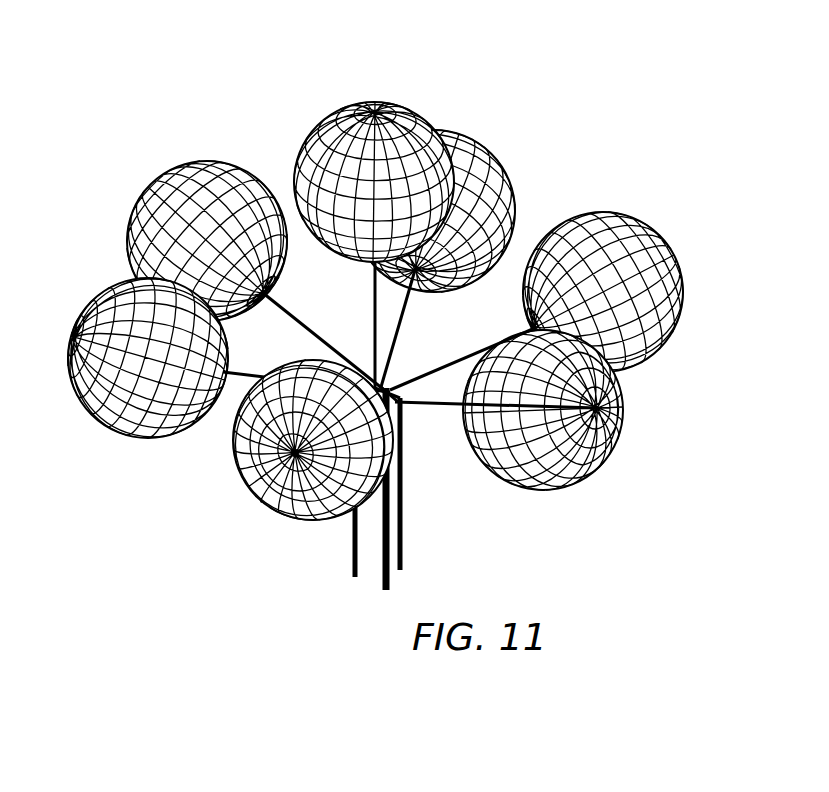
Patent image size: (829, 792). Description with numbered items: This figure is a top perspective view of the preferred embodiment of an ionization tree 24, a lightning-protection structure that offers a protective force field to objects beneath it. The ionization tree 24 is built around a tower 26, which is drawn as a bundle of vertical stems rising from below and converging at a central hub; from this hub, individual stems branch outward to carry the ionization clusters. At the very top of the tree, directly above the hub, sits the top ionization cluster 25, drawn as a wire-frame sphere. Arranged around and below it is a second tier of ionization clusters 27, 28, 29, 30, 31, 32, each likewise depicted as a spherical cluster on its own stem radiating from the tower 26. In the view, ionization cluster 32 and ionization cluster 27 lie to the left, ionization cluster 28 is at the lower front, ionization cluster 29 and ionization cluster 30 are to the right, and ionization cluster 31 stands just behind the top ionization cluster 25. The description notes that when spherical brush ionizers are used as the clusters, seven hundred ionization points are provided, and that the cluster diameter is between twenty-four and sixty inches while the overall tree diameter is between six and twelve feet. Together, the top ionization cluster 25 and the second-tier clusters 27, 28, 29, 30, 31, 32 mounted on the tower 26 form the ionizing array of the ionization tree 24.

The ionization tree 24 is at (375, 298).
The top ionization cluster 25 is at (378, 102).
The tower 26 is at (403, 547).
The ionization cluster 27 is at (138, 435).
The ionization cluster 28 is at (300, 520).
The ionization cluster 29 is at (606, 455).
The ionization cluster 30 is at (617, 213).
The ionization cluster 31 is at (477, 143).
The ionization cluster 32 is at (209, 162).